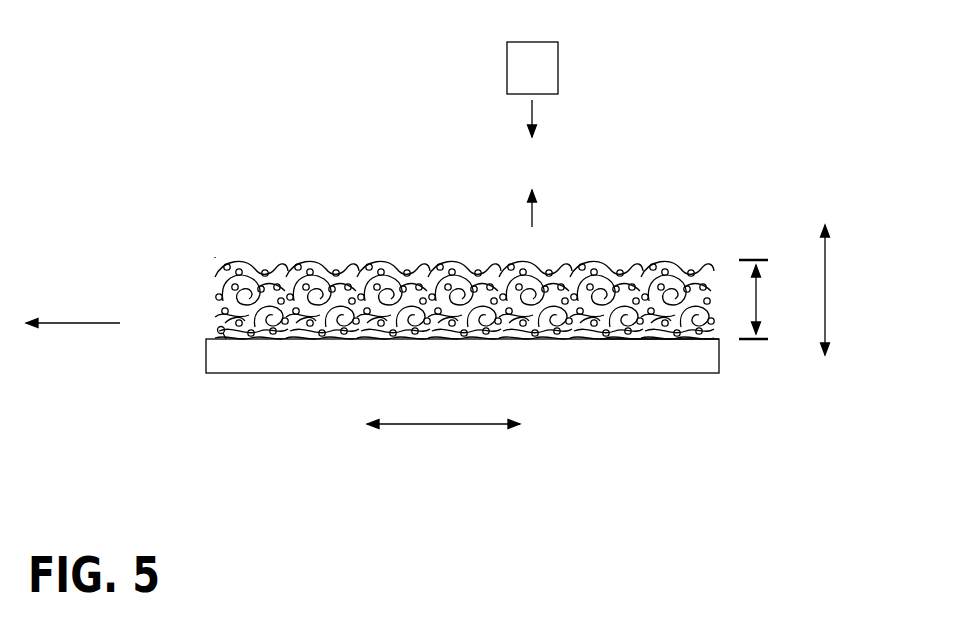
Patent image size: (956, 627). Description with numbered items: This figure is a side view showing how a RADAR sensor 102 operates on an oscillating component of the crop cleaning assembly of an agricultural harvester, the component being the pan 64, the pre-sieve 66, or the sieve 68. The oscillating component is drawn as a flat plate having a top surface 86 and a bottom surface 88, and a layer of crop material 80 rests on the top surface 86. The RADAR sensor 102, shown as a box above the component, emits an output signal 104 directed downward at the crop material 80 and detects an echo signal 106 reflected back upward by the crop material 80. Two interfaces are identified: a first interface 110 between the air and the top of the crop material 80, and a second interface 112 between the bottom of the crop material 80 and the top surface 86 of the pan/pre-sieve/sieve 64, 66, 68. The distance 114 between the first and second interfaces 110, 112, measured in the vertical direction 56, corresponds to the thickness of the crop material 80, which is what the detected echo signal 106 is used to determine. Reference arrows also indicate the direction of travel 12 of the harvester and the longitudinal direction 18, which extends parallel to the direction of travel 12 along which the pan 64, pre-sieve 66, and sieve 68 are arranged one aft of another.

The direction of travel 12 is at (80, 323).
The longitudinal direction 18 is at (440, 426).
The vertical direction 56 is at (826, 283).
The pan 64 is at (111, 170).
The pre-sieve 66 is at (111, 170).
The sieve 68 is at (78, 170).
The crop material 80 is at (343, 258).
The top surface 86 is at (219, 327).
The bottom surface 88 is at (258, 373).
The RADAR sensor 102 is at (558, 57).
The output signal 104 is at (533, 113).
The echo signal 106 is at (533, 215).
The first interface 110 is at (389, 212).
The second interface 112 is at (714, 335).
The distance 114 is at (757, 303).